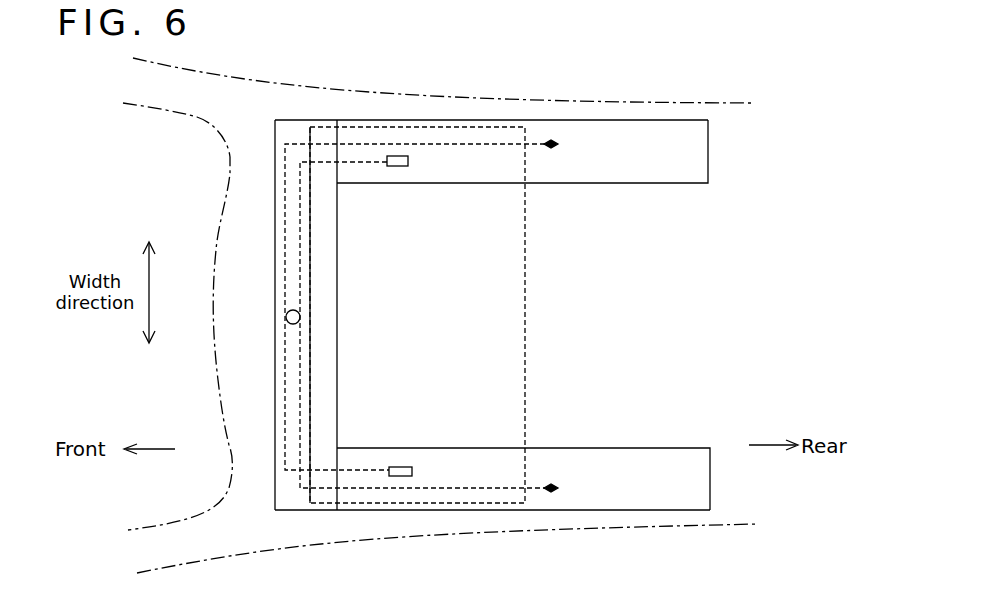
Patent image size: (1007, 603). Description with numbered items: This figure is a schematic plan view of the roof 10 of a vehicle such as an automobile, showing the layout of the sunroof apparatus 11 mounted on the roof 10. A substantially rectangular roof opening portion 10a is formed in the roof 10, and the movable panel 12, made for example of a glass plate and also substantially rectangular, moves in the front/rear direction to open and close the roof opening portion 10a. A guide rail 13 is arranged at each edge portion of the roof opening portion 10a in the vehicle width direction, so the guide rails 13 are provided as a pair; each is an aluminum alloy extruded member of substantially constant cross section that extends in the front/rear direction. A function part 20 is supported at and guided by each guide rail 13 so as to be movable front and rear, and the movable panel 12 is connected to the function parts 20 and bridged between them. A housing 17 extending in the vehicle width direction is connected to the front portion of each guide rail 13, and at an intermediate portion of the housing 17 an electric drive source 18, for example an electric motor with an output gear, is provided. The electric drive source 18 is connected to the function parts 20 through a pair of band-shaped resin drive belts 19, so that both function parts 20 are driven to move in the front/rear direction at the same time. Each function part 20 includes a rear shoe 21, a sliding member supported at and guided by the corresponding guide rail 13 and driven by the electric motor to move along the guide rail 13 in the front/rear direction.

The roof 10 is at (520, 531).
The roof opening portion 10a is at (467, 335).
The sunroof apparatus 11 is at (627, 96).
The movable panel 12 is at (525, 312).
The guide rail 13 is at (478, 119).
The housing 17 is at (275, 129).
The electric drive source 18 is at (289, 321).
The drive belt 19 is at (287, 387).
The function part 20 is at (424, 316).
The rear shoe 21 is at (396, 166).